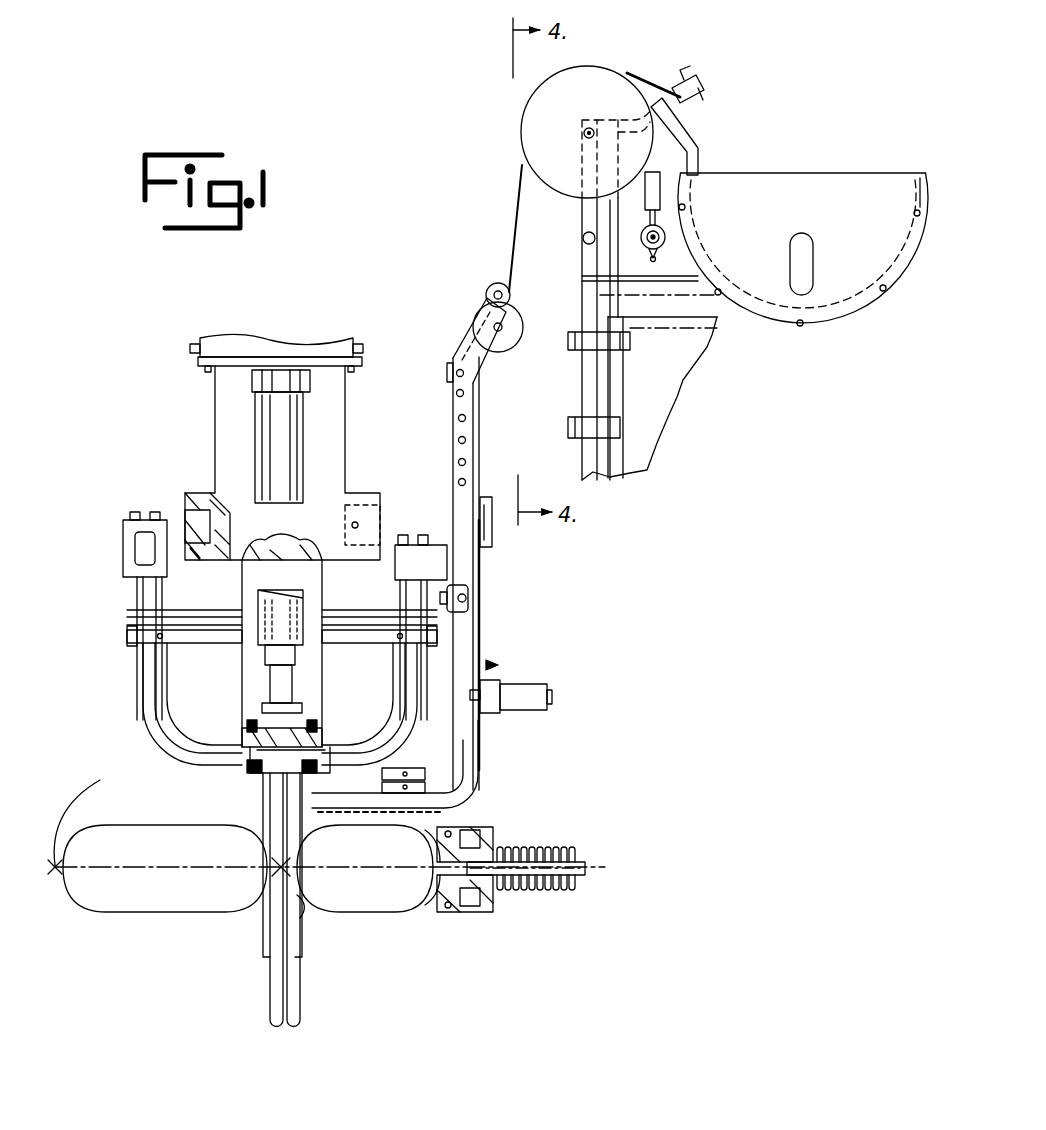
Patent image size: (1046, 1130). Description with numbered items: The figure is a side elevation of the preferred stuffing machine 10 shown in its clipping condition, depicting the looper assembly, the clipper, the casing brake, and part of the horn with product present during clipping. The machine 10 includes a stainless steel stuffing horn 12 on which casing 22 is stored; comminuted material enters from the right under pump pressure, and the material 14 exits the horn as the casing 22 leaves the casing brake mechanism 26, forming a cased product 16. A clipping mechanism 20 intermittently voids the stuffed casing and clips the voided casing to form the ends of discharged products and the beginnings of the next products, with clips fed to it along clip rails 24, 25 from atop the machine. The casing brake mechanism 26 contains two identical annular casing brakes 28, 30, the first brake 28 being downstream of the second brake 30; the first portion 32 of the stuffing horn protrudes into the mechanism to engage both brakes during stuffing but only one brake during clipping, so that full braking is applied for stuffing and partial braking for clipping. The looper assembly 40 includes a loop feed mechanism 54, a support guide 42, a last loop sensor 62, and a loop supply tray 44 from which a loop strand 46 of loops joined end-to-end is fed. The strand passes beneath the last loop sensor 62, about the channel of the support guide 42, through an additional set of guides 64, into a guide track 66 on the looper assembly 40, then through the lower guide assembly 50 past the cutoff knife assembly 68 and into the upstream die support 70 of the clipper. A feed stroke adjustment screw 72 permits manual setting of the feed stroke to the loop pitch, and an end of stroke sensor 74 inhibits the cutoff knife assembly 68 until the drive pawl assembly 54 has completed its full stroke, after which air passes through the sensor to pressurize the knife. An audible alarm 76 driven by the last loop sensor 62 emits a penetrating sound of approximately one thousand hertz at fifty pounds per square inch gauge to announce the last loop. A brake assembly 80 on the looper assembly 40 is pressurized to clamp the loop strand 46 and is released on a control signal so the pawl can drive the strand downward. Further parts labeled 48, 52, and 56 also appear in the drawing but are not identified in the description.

The stuffing machine 10 is at (256, 1011).
The stuffing horn 12 is at (577, 875).
The material 14 is at (365, 868).
The cased product 16 is at (345, 912).
The clipping mechanism 20 is at (216, 413).
The casing 22 is at (537, 847).
The clip rail 24 is at (140, 597).
The clip rail 25 is at (433, 635).
The casing brake mechanism 26 is at (460, 912).
The casing brake 28 is at (478, 826).
The casing brake 30 is at (510, 838).
The first portion of the stuffing horn 32 is at (435, 887).
The looper assembly 40 is at (482, 645).
The support guide 42 is at (512, 137).
The loop supply tray 44 is at (830, 330).
The loop strand 46 is at (515, 213).
The wheel 48 is at (537, 107).
The lower guide assembly 50 is at (483, 763).
The closure device 52 is at (277, 858).
The loop feed mechanism 54 is at (492, 525).
The clip 56 is at (300, 920).
The last loop sensor 62 is at (650, 66).
The additional set of guides 64 is at (488, 296).
The guide track 66 is at (476, 468).
The cutoff knife assembly 68 is at (477, 788).
The upstream die support 70 is at (300, 983).
The feed stroke adjustment screw 72 is at (456, 334).
The end of stroke sensor 74 is at (440, 560).
The audible alarm 76 is at (673, 157).
The brake assembly 80 is at (503, 663).